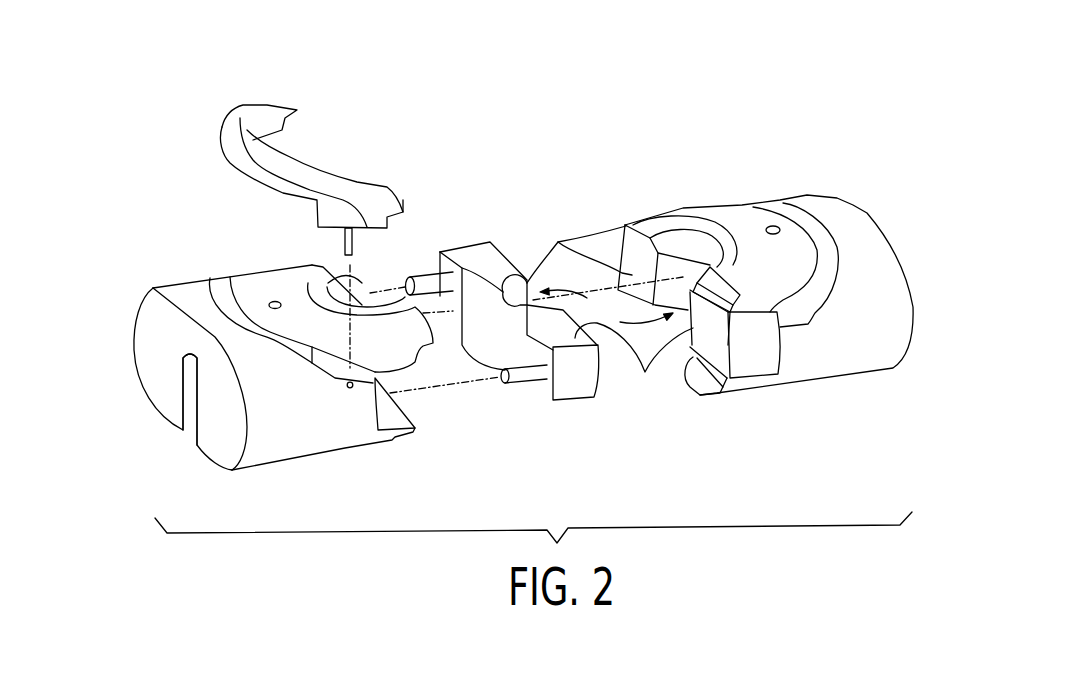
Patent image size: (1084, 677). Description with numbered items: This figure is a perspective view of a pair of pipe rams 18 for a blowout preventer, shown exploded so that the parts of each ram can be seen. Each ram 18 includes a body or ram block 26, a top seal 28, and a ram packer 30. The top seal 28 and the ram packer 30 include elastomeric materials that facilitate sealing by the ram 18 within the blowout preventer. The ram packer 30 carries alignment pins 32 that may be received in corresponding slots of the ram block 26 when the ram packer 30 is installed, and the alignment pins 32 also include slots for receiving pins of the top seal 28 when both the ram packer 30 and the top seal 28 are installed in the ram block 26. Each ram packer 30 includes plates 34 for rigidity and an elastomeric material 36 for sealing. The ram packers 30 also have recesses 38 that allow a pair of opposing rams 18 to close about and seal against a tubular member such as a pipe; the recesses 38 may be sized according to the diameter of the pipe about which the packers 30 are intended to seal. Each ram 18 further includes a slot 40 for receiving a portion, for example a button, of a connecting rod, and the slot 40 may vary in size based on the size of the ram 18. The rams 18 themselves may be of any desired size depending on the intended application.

The ram 18 is at (192, 108).
The ram block 26 is at (152, 302).
The top seal 28 is at (250, 107).
The ram packer 30 is at (573, 398).
The alignment pin 32 is at (432, 272).
The plate 34 is at (556, 241).
The elastomeric material 36 is at (634, 363).
The recess 38 is at (606, 305).
The slot 40 is at (191, 438).